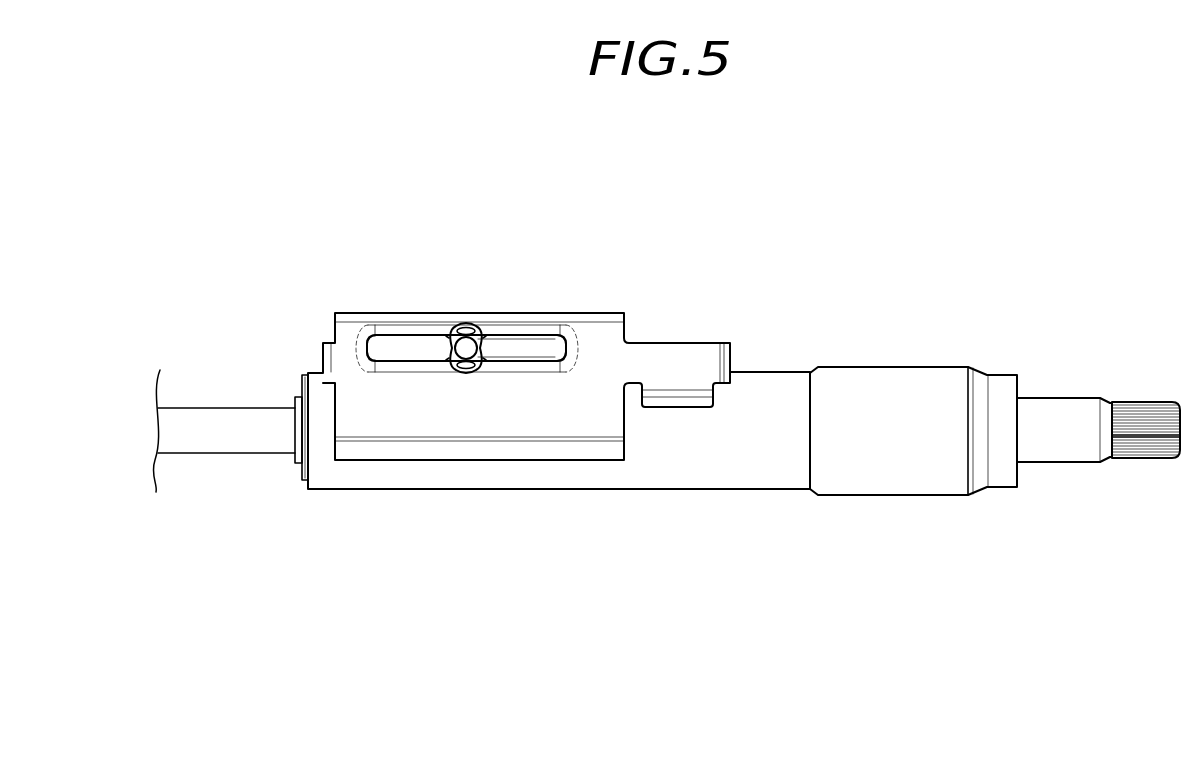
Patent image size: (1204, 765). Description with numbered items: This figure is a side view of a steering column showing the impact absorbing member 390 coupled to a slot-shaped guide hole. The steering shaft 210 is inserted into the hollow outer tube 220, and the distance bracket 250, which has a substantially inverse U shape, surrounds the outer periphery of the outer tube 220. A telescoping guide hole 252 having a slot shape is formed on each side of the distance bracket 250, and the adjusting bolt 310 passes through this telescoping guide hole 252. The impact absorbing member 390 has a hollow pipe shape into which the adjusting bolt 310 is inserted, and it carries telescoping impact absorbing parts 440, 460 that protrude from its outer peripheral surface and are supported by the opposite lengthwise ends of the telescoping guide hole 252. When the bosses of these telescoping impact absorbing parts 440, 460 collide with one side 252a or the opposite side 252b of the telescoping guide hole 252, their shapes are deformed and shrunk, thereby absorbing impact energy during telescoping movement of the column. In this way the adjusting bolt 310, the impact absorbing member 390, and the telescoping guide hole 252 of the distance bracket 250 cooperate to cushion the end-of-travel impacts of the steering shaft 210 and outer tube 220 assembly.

The steering shaft 210 is at (1077, 397).
The outer tube 220 is at (935, 366).
The distance bracket 250 is at (692, 342).
The telescoping guide hole 252 is at (533, 347).
The one side of the telescoping guide hole 252a is at (373, 348).
The opposite side of the telescoping guide hole 252b is at (553, 337).
The adjusting bolt 310 is at (455, 338).
The impact absorbing member 390 is at (457, 363).
The telescoping impact absorbing part 440 is at (445, 347).
The telescoping impact absorbing part 460 is at (493, 347).